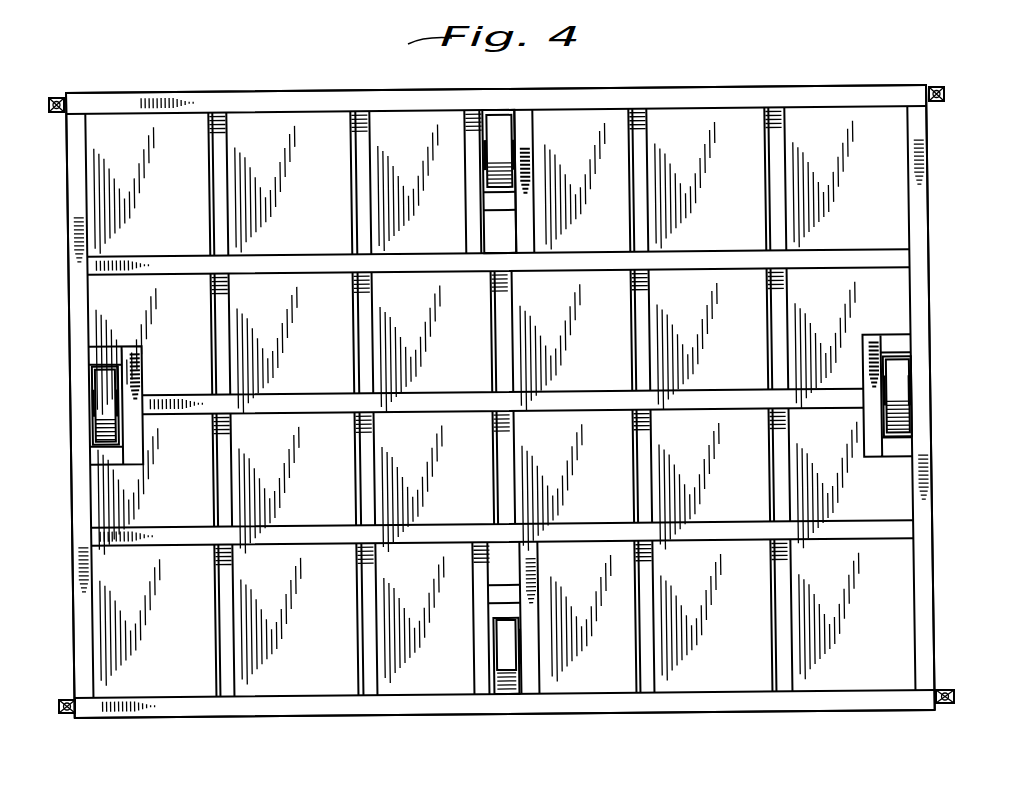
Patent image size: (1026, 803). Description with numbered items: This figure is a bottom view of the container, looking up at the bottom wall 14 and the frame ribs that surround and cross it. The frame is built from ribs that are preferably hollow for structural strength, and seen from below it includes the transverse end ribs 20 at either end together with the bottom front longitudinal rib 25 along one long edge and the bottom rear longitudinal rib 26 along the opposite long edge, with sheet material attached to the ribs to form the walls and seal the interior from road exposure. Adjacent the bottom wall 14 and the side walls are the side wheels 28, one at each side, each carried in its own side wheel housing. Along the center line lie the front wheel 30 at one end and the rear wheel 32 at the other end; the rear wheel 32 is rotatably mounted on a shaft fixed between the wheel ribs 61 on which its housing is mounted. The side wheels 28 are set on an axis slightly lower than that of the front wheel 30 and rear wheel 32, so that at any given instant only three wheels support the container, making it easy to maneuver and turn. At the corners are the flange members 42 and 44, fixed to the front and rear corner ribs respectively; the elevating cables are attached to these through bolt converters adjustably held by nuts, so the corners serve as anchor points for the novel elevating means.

The bottom wall 14 is at (467, 319).
The transverse end ribs 20 is at (921, 303).
The bottom front longitudinal rib 25 is at (630, 92).
The bottom rear longitudinal rib 26 is at (590, 705).
The side wheels 28 is at (93, 413).
The front wheel 30 is at (500, 170).
The rear wheel 32 is at (507, 644).
The flange member 42 is at (52, 112).
The flange member 44 is at (62, 713).
The wheel ribs 61 is at (528, 563).